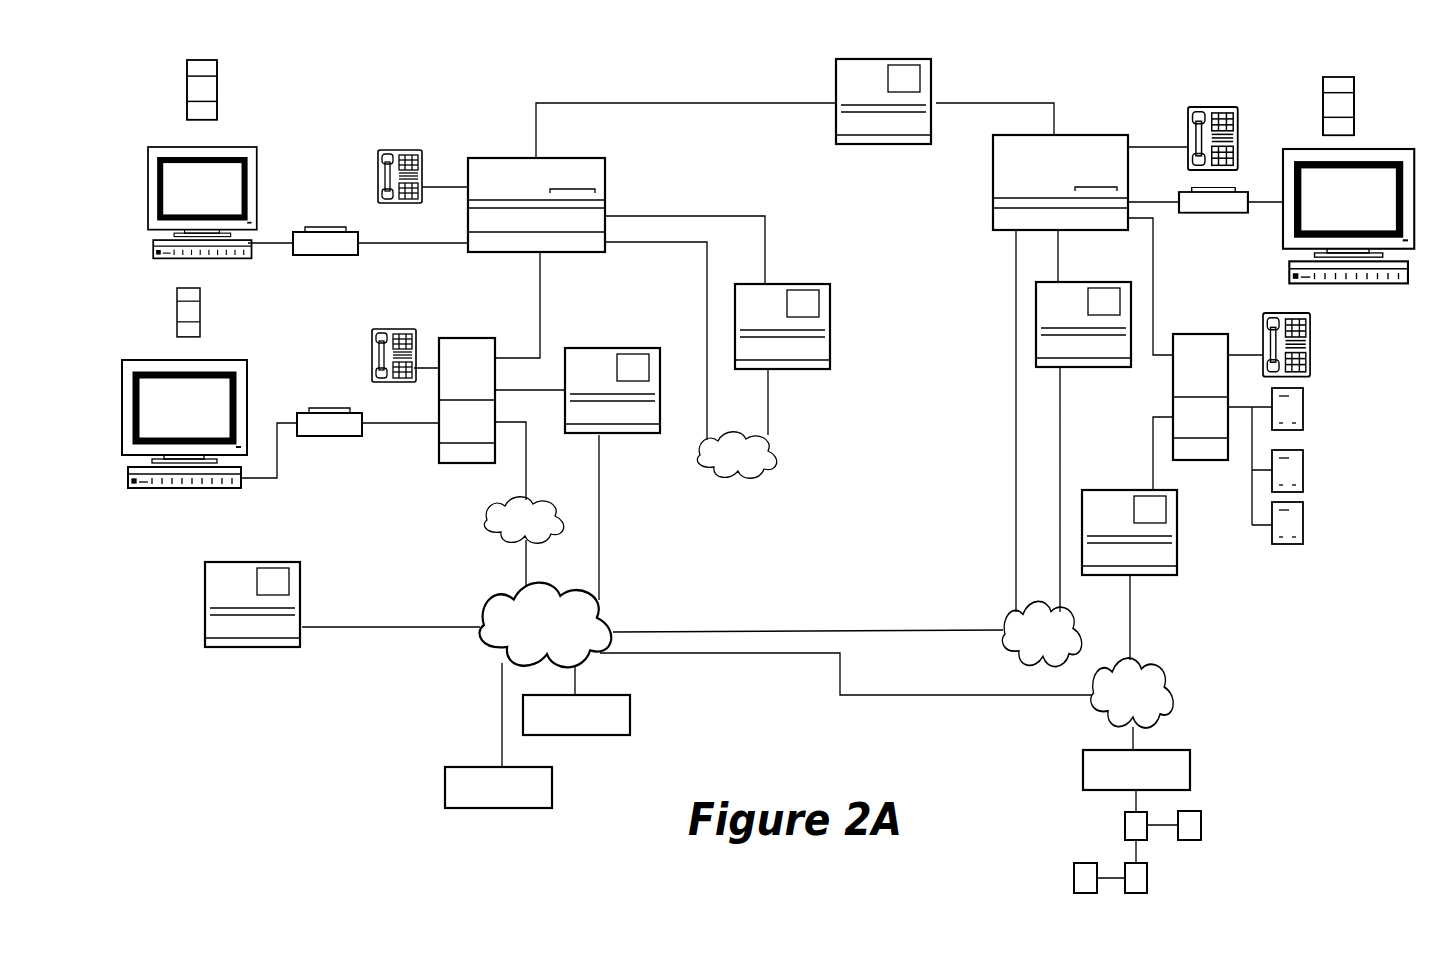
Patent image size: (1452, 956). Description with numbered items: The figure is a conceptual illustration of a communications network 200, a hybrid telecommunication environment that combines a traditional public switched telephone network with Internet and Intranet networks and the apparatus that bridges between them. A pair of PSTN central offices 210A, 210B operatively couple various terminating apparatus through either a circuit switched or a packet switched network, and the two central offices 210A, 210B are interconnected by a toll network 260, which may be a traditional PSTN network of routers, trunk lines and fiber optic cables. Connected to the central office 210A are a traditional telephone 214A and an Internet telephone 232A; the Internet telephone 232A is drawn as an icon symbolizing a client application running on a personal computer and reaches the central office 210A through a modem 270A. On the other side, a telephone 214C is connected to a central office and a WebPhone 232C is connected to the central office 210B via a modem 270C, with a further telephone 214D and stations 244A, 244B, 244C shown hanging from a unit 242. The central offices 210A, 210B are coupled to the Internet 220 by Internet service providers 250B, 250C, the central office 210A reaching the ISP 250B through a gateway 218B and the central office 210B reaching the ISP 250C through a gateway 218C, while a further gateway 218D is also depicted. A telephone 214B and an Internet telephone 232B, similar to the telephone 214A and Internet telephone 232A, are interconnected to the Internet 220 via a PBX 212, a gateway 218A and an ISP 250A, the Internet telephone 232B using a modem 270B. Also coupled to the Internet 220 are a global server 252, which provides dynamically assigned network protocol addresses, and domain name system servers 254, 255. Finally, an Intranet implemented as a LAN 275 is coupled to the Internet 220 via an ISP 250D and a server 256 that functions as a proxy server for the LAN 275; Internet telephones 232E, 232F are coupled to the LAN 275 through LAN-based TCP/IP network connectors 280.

The network 200 is at (1165, 77).
The PSTN central office 210A is at (577, 158).
The PSTN central office 210B is at (1080, 135).
The PBX 212 is at (457, 338).
The telephone 214A is at (388, 150).
The telephone 214B is at (395, 318).
The telephone 214C is at (1207, 107).
The telephone 214D is at (1310, 343).
The gateway 218A is at (593, 348).
The gateway 218B is at (794, 284).
The gateway 218C is at (1082, 368).
The voice server 218D is at (1128, 490).
The Internet 220 is at (483, 642).
The Internet telephone 232A is at (245, 147).
The Internet telephone 232B is at (228, 360).
The WebPhone 232C is at (1378, 149).
The WebPhone 232E is at (1074, 878).
The Internet telephone 232F is at (1201, 822).
The switch 242 is at (1185, 334).
The station device 244A is at (1303, 410).
The station device 244B is at (1303, 470).
The station device 244C is at (1303, 522).
The Internet service provider 250A is at (485, 525).
The Internet service provider 250B is at (777, 451).
The Internet service provider 250C is at (1003, 615).
The Internet service provider 250D is at (1175, 690).
The global server 252 is at (235, 560).
The domain name system server 254 is at (630, 712).
The domain name system server 255 is at (552, 790).
The server 256 is at (1190, 765).
The toll network 260 is at (862, 59).
The modem 270A is at (310, 255).
The modem 270B is at (313, 435).
The modem 270C is at (1197, 212).
The LAN 275 is at (1134, 803).
The LAN-based TCP/IP network connector 280 is at (1147, 883).